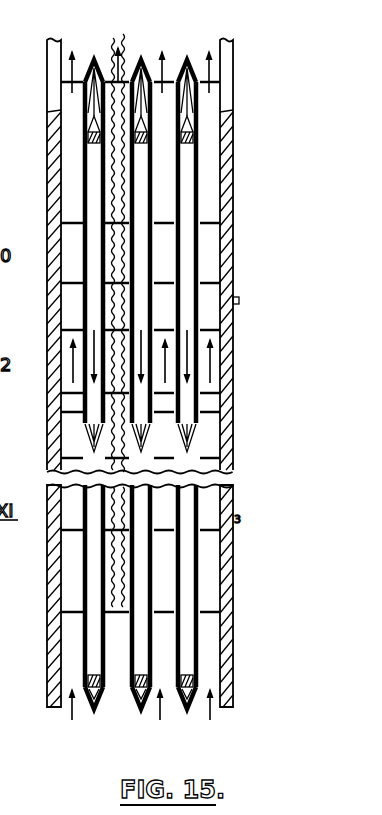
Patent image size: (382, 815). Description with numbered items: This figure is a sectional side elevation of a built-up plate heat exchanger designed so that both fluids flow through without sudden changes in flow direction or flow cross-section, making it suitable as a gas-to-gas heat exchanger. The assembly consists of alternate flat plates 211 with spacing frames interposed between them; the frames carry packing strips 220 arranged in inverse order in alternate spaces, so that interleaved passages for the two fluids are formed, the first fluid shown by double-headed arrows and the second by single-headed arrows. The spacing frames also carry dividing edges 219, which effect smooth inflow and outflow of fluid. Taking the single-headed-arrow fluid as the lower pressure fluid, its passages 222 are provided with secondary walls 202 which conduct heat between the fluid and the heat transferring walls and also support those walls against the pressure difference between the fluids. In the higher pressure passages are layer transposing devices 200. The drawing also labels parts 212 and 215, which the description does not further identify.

The dividing edges 219 is at (22, 697).
The insert block 212 is at (193, 137).
The flat plates 211 is at (176, 175).
The passages for the lower pressure fluid 222 is at (224, 221).
The channel partition 215 is at (212, 237).
The secondary walls 202 is at (165, 372).
The layer transposing devices 200 is at (200, 440).
The packing strips 220 is at (200, 688).